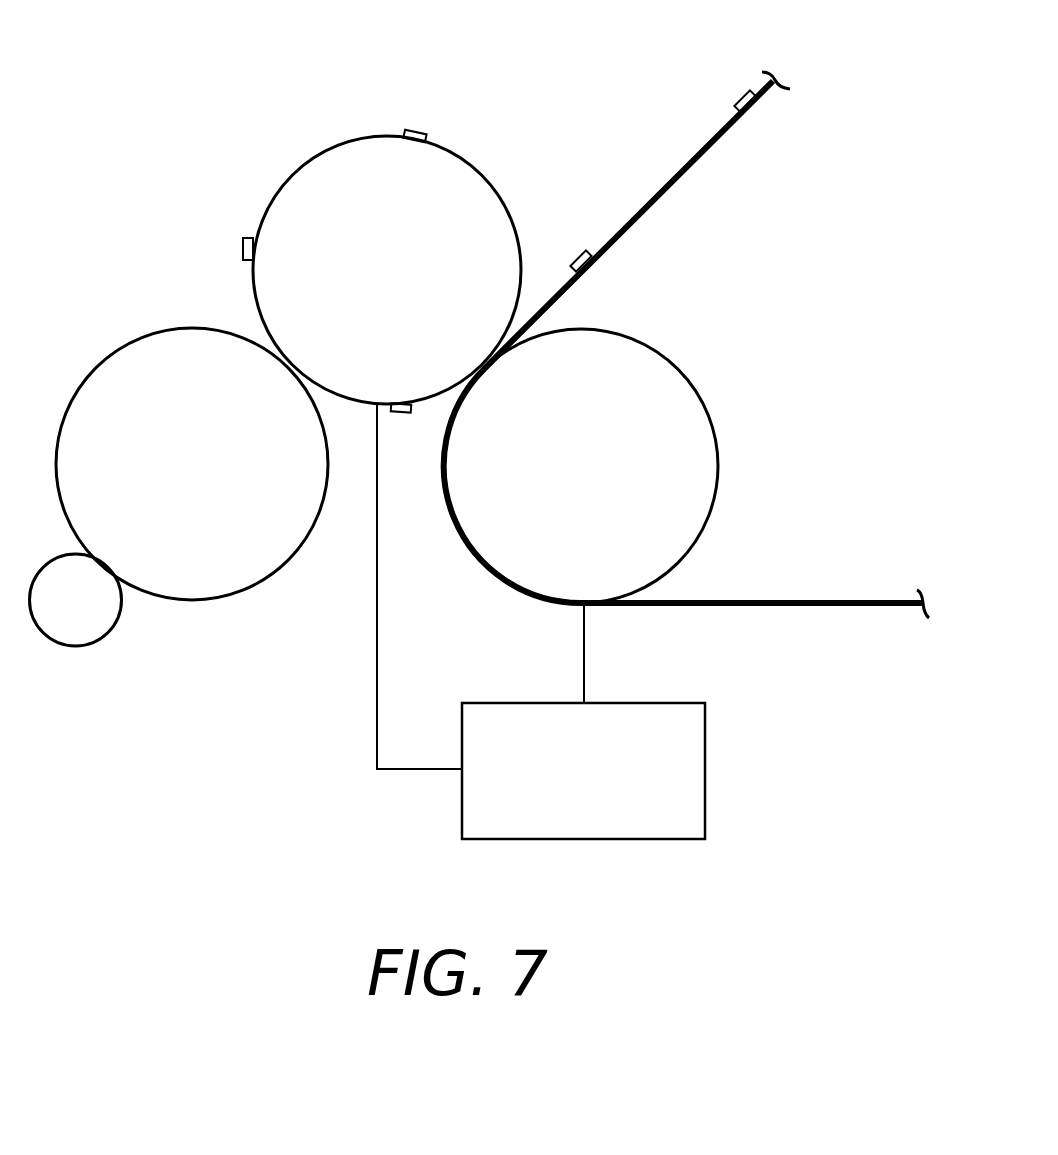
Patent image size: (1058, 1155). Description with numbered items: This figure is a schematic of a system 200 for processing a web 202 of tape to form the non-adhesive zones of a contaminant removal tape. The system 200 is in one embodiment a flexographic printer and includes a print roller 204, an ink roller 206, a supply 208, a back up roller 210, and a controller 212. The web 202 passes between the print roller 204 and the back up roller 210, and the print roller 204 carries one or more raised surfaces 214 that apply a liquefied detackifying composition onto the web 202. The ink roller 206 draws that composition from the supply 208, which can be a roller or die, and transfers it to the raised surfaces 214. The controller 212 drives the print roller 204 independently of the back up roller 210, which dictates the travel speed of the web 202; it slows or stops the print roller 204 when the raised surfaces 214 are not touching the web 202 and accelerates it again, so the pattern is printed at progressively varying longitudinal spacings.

The system 200 is at (169, 54).
The web 202 is at (815, 601).
The print roller 204 is at (487, 208).
The ink roller 206 is at (225, 568).
The supply 208 is at (79, 625).
The back up roller 210 is at (673, 422).
The controller 212 is at (589, 817).
The raised surfaces 214 is at (413, 130).